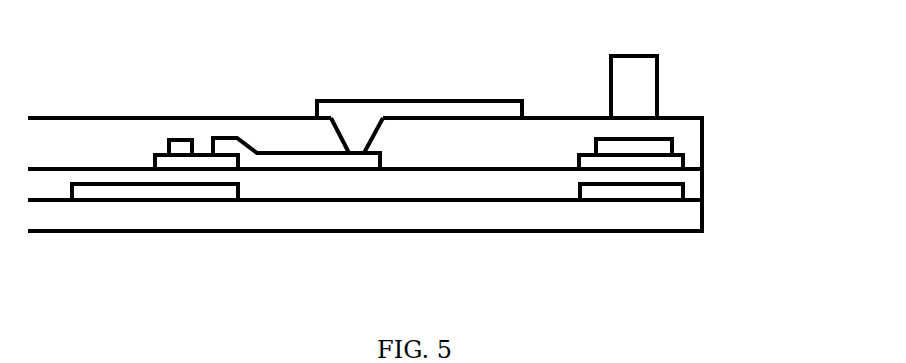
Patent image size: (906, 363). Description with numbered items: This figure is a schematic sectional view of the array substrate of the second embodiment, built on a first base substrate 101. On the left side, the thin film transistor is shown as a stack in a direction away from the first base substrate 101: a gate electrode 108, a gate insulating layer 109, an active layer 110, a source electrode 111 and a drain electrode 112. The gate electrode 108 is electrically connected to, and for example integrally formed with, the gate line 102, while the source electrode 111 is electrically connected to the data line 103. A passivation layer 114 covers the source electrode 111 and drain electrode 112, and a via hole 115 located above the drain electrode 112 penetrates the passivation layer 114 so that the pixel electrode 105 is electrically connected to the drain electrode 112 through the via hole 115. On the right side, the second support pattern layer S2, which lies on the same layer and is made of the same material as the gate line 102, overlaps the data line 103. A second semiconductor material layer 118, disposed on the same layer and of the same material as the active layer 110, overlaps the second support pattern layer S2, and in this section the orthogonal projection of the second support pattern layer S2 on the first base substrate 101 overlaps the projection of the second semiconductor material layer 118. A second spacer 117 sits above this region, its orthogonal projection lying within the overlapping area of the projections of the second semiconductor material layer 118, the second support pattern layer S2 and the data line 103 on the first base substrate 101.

The first base substrate 101 is at (690, 218).
The gate line 102 is at (100, 190).
The data line 103 is at (647, 147).
The pixel electrode 105 is at (470, 112).
The gate electrode 108 is at (207, 190).
The gate insulating layer 109 is at (690, 188).
The active layer 110 is at (197, 163).
The source electrode 111 is at (178, 137).
The drain electrode 112 is at (227, 147).
The passivation layer 114 is at (690, 148).
The via hole 115 is at (355, 133).
The second spacer 117 is at (607, 78).
The second semiconductor material layer 118 is at (648, 162).
The second support pattern layer S2 is at (598, 188).